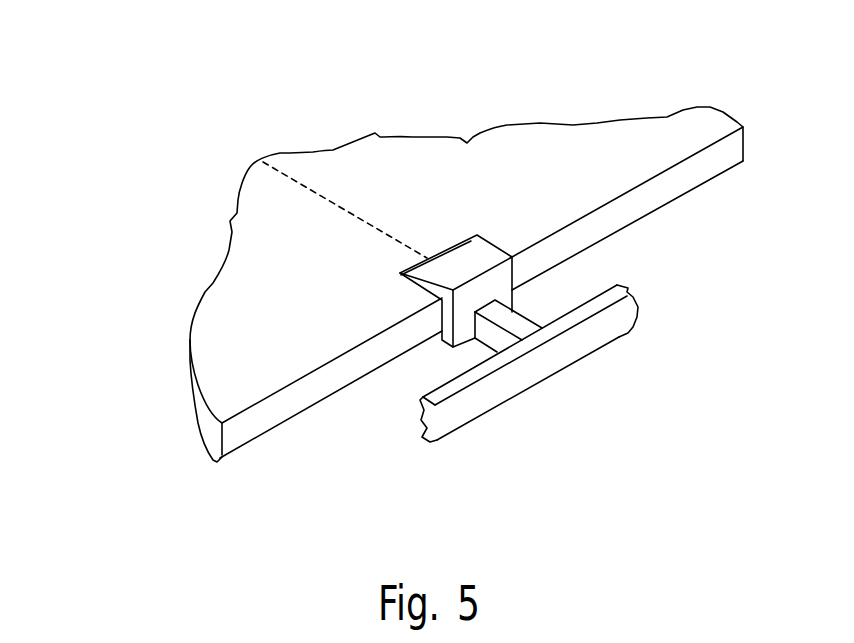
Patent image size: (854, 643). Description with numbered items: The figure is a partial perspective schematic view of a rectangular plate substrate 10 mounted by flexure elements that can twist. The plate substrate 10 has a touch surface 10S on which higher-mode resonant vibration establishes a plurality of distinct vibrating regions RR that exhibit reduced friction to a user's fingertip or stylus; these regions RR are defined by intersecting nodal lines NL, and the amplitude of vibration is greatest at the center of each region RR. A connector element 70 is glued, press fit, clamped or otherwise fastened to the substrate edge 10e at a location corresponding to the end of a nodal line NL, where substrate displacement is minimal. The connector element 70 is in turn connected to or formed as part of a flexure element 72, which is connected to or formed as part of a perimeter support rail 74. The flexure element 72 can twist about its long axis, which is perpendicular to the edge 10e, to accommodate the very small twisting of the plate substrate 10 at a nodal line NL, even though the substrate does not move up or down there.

The plate substrate 10 is at (598, 123).
The touch surface 10S is at (253, 373).
The substrate edge 10e is at (237, 428).
The nodal line NL is at (372, 222).
The vibrating region RR is at (418, 168).
The connector element 70 is at (470, 257).
The flexure element 72 is at (513, 320).
The perimeter support rail 74 is at (555, 352).